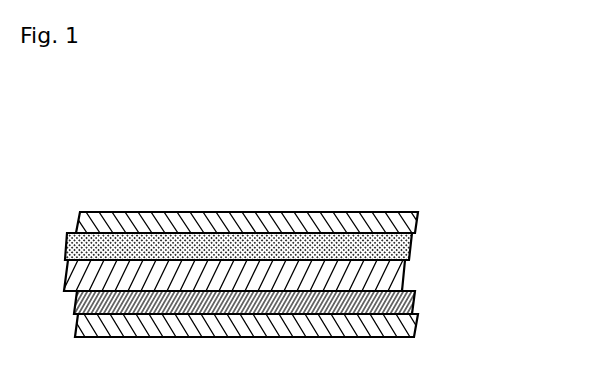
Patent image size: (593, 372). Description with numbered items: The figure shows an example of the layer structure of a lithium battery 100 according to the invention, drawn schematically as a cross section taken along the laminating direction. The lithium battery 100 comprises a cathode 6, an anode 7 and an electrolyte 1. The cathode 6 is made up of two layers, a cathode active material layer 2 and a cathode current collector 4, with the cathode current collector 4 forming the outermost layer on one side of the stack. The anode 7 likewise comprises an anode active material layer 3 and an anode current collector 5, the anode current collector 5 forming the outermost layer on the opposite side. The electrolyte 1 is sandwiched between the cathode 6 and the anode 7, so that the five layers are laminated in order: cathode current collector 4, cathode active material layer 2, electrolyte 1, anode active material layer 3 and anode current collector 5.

The lithium battery 100 is at (294, 233).
The electrolyte 1 is at (395, 275).
The cathode active material layer 2 is at (385, 250).
The anode active material layer 3 is at (390, 300).
The cathode current collector 4 is at (412, 227).
The anode current collector 5 is at (415, 316).
The cathode 6 is at (299, 238).
The anode 7 is at (298, 314).